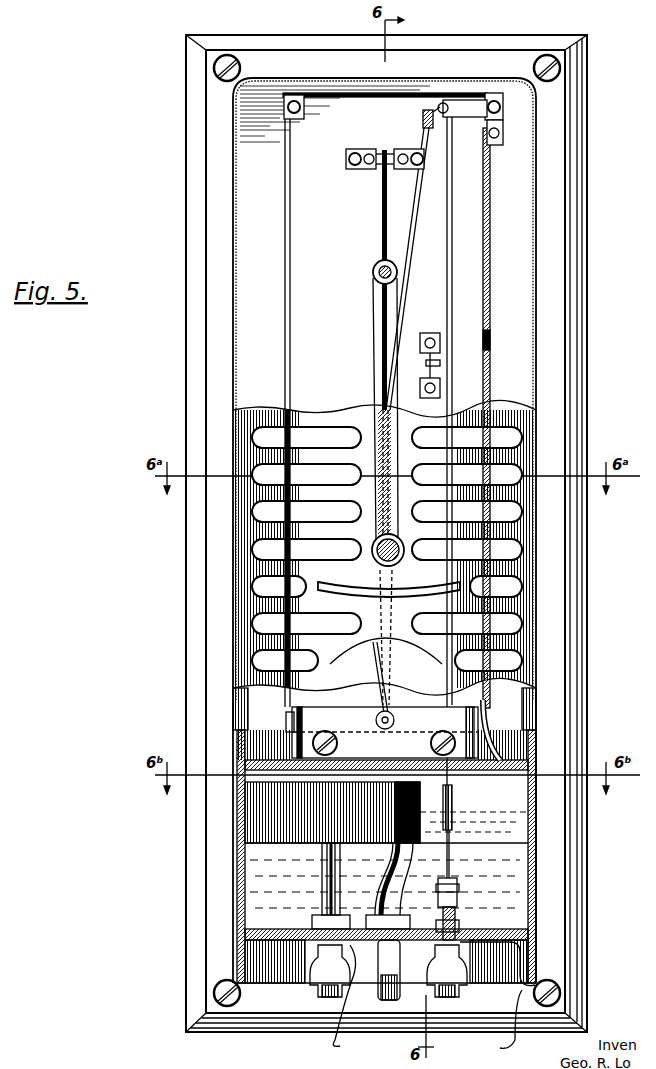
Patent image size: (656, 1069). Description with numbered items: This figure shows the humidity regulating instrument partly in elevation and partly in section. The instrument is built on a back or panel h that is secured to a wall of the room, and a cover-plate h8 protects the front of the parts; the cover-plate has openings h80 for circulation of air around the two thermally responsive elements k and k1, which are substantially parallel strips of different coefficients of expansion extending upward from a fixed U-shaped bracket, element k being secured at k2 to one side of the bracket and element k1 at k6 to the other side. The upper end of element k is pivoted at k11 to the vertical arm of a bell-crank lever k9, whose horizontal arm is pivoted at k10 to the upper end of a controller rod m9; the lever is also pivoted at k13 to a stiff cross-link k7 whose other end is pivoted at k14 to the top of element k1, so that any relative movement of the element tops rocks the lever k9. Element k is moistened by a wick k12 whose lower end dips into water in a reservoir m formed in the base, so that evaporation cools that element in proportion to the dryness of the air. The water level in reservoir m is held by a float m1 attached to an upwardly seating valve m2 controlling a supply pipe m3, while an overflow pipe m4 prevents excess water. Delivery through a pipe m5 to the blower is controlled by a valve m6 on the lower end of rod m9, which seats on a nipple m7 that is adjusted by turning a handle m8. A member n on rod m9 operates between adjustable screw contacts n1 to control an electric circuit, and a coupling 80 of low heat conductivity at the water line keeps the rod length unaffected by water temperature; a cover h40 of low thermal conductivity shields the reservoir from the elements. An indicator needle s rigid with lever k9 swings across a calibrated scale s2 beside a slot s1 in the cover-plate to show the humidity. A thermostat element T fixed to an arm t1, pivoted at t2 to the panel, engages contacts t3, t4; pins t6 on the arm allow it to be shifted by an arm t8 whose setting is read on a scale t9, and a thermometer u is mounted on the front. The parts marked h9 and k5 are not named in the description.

The panel h is at (552, 147).
The cover-plate h8 is at (233, 355).
The openings h80 is at (308, 440).
The reservoir cover h40 is at (538, 755).
The compartment bottom h9 is at (538, 840).
The float m1 is at (386, 812).
The coupling 80 is at (454, 790).
The controller rod m9 is at (452, 244).
The reservoir m is at (469, 902).
The valve m6 is at (459, 888).
The nipple m7 is at (459, 906).
The overflow pipe m4 is at (392, 978).
The supply pipe m3 is at (320, 990).
The delivery pipe m5 is at (460, 990).
The upwardly seating valve m2 is at (344, 1002).
The handle m8 is at (497, 1000).
The securing point of element K k2 is at (470, 712).
The securing point of element K' k6 is at (306, 726).
The block post k5 is at (362, 708).
The cross-link k7 is at (412, 93).
The thermally responsive element K' k1 is at (290, 258).
The pivot k14 is at (293, 121).
The thermally responsive element K k is at (490, 270).
The wick k12 is at (490, 340).
The pivot k10 is at (462, 100).
The pivot k13 is at (501, 107).
The bell-crank lever k9 is at (455, 118).
The pivot k11 is at (495, 145).
The indicator needle s is at (418, 205).
The thermally responsive element T is at (382, 240).
The contact t3 is at (356, 170).
The contact t4 is at (404, 149).
The pivot t2 is at (373, 274).
The arm t1 is at (374, 312).
The thermometer u is at (390, 505).
The adjustable switch contacts n1 is at (428, 333).
The member n is at (440, 366).
The calibrated scale s2 is at (389, 587).
The slot s1 is at (365, 588).
The arm t8 is at (376, 672).
The scale t9 is at (358, 626).
The pins t6 is at (400, 704).